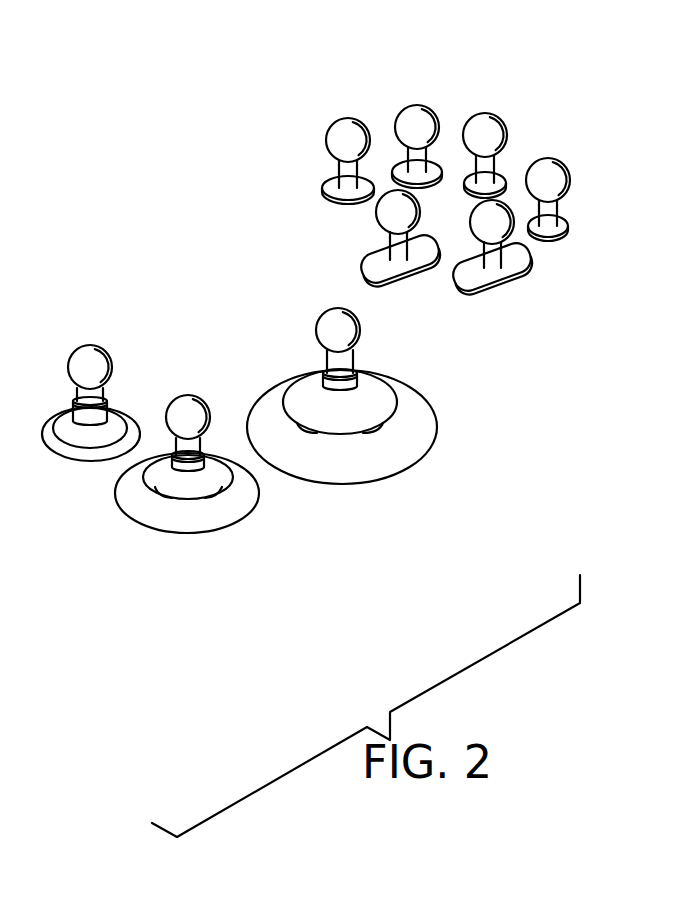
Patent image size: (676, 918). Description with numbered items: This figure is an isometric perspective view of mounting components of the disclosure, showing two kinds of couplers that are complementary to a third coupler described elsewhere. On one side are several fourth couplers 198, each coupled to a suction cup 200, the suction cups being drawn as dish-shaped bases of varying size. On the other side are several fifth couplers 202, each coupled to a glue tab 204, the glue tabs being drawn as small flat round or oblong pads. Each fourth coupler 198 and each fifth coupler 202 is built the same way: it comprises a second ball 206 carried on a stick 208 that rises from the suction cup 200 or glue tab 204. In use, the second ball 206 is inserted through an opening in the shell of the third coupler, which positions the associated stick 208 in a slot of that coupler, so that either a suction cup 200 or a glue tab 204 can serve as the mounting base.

The fourth coupler 198 is at (92, 344).
The suction cup 200 is at (340, 487).
The fifth coupler 202 is at (351, 118).
The glue tab 204 is at (432, 185).
The second ball 206 is at (548, 158).
The stick 208 is at (557, 212).